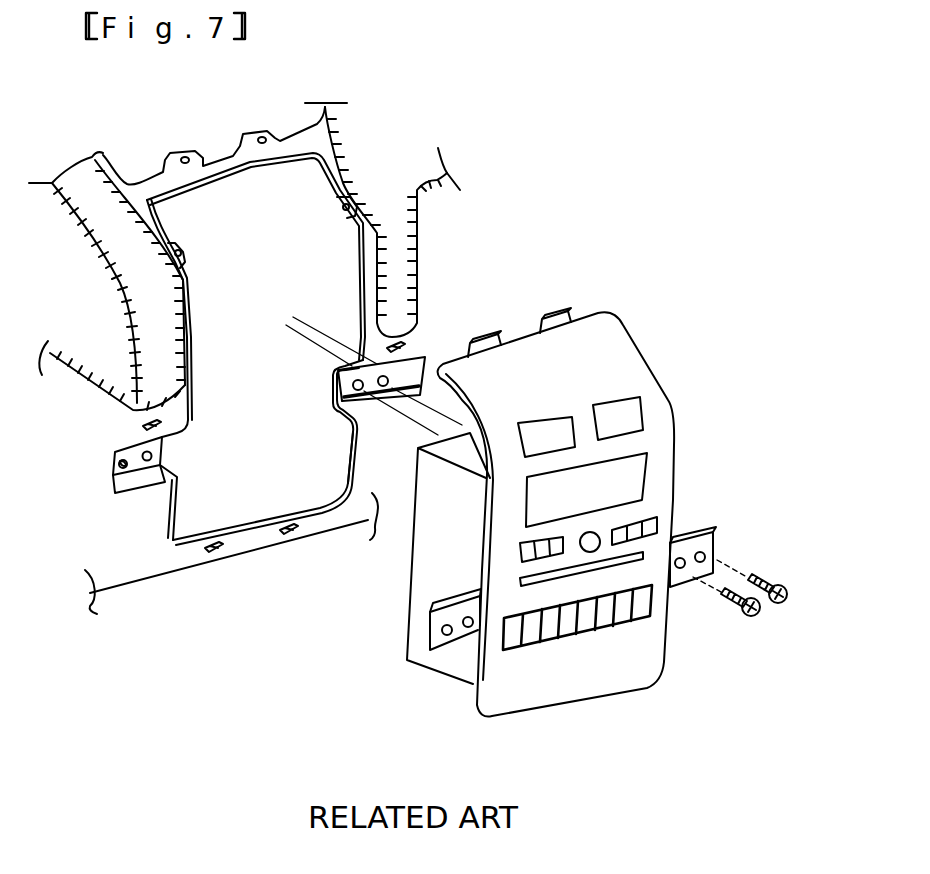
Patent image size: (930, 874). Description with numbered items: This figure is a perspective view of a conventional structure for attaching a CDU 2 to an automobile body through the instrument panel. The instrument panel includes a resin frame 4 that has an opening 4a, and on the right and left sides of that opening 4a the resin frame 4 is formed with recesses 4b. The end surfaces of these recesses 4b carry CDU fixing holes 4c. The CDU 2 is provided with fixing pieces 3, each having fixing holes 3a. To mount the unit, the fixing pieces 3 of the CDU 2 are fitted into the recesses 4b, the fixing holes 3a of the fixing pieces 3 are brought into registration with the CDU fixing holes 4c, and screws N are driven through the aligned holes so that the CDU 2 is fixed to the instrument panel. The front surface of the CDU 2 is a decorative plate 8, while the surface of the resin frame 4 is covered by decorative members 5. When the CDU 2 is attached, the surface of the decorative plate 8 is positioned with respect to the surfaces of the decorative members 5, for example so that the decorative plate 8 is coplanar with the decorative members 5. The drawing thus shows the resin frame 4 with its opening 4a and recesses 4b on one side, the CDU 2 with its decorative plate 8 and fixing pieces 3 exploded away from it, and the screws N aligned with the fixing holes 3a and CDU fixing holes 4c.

The CDU 2 is at (603, 487).
The fixing pieces 3 is at (755, 502).
The fixing holes 3a is at (717, 537).
The resin frame 4 is at (362, 345).
The opening 4a is at (351, 456).
The recesses 4b is at (335, 396).
The CDU fixing holes 4c is at (335, 419).
The decorative members 5 is at (417, 247).
The decorative plate 8 is at (647, 382).
The screws N is at (787, 597).